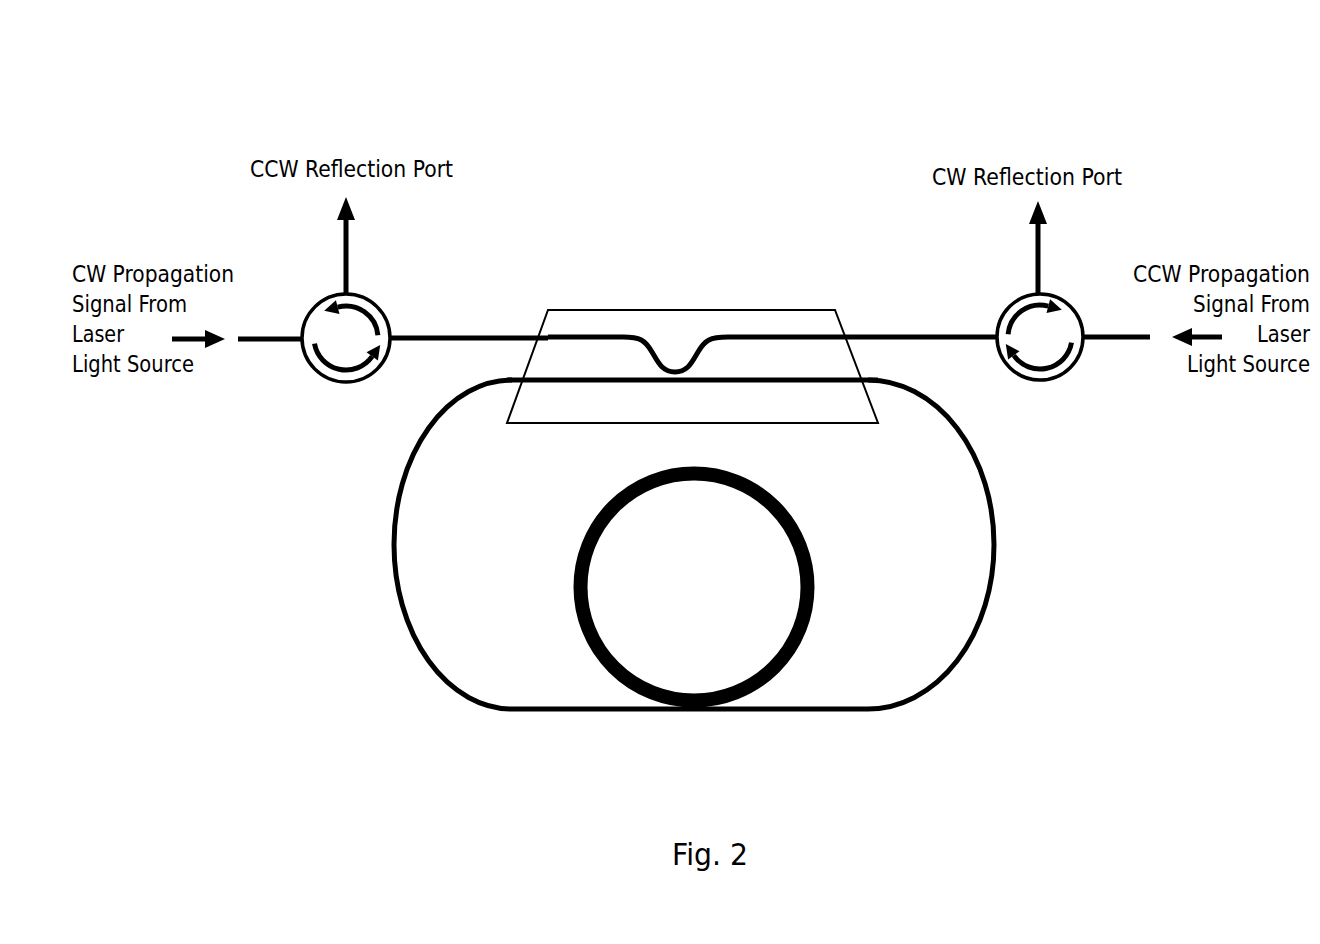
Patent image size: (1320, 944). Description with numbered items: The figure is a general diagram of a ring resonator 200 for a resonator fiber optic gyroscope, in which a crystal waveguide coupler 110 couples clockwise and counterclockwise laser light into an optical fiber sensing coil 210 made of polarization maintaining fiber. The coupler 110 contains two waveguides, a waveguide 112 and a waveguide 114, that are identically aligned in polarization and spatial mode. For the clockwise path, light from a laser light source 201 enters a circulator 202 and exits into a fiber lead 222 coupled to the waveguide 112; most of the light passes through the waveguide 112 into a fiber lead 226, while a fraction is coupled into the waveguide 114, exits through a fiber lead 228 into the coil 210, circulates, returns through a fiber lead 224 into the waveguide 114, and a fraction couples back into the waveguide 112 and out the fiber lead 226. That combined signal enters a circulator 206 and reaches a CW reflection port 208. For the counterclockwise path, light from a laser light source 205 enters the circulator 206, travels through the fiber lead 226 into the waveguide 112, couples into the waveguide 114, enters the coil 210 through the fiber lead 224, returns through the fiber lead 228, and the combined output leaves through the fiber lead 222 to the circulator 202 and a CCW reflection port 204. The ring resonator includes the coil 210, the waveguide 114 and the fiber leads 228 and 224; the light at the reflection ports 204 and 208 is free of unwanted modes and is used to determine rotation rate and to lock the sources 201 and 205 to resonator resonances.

The ring resonator 200 is at (702, 172).
The laser light source 201 is at (282, 342).
The circulator 202 is at (343, 384).
The CCW reflection port 204 is at (347, 247).
The laser light source 205 is at (1132, 342).
The circulator 206 is at (1037, 380).
The CW reflection port 208 is at (1040, 242).
The optical fiber sensing coil 210 is at (571, 589).
The crystal waveguide coupler 110 is at (770, 310).
The waveguide 112 is at (627, 337).
The waveguide 114 is at (755, 380).
The fiber lead 222 is at (503, 335).
The fiber lead 224 is at (488, 383).
The fiber lead 226 is at (953, 335).
The fiber lead 228 is at (907, 390).